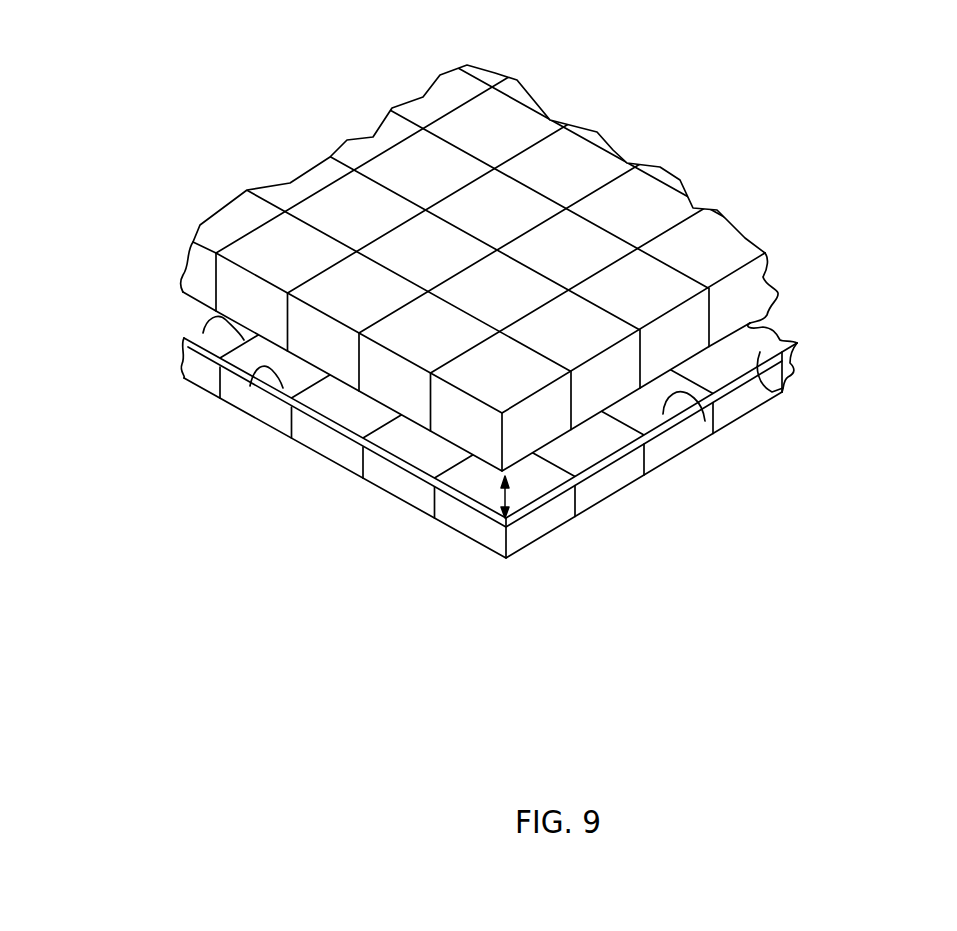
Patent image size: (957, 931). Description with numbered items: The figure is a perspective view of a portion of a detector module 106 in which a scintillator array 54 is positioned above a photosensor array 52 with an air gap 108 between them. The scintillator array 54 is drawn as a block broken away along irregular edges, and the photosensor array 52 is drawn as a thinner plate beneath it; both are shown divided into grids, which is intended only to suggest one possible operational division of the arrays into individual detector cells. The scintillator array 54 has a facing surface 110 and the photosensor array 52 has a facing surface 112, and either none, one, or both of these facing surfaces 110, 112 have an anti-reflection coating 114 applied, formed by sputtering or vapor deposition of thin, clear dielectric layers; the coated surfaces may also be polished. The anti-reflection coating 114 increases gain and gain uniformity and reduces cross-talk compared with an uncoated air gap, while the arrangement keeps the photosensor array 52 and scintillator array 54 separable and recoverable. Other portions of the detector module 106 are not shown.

The photosensor array 52 is at (471, 363).
The scintillator array 54 is at (663, 166).
The detector module 106 is at (515, 299).
The air gap 108 is at (513, 490).
The facing surface of scintillator array 110 is at (203, 332).
The facing surface of photosensor array 112 is at (262, 378).
The anti-reflection coating 114 is at (370, 478).